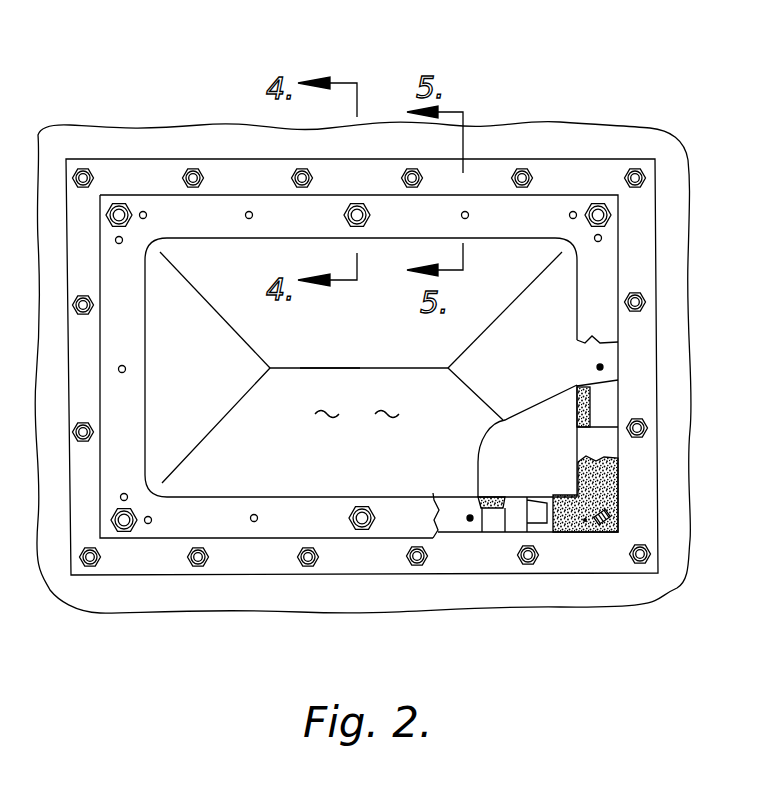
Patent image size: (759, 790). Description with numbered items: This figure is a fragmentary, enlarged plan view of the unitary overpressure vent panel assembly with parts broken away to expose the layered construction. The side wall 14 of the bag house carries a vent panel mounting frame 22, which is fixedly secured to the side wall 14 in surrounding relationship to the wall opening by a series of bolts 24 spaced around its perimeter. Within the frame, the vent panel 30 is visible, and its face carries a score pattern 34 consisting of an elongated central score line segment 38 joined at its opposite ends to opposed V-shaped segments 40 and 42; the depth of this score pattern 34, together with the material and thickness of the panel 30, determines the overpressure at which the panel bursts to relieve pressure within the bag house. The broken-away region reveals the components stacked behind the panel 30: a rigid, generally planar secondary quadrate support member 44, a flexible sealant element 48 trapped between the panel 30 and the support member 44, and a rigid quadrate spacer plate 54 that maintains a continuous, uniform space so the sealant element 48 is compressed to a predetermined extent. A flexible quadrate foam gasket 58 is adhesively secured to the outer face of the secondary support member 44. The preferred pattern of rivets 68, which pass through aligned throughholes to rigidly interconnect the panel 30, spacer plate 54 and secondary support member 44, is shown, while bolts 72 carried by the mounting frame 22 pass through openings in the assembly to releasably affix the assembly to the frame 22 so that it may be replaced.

The side wall 14 is at (672, 278).
The vent panel mounting frame 22 is at (538, 168).
The bolts 24 is at (641, 170).
The vent panel 30 is at (332, 425).
The score pattern 34 is at (328, 356).
The central score line segment 38 is at (390, 368).
The V-shaped segment 40 is at (193, 283).
The V-shaped segment 42 is at (503, 322).
The secondary quadrate support member 44 is at (518, 513).
The tubular flexible sealant element 48 is at (578, 412).
The spacer plate 54 is at (607, 398).
The gasket 58 is at (618, 476).
The rivets 68 is at (254, 514).
The bolts 72 is at (605, 215).